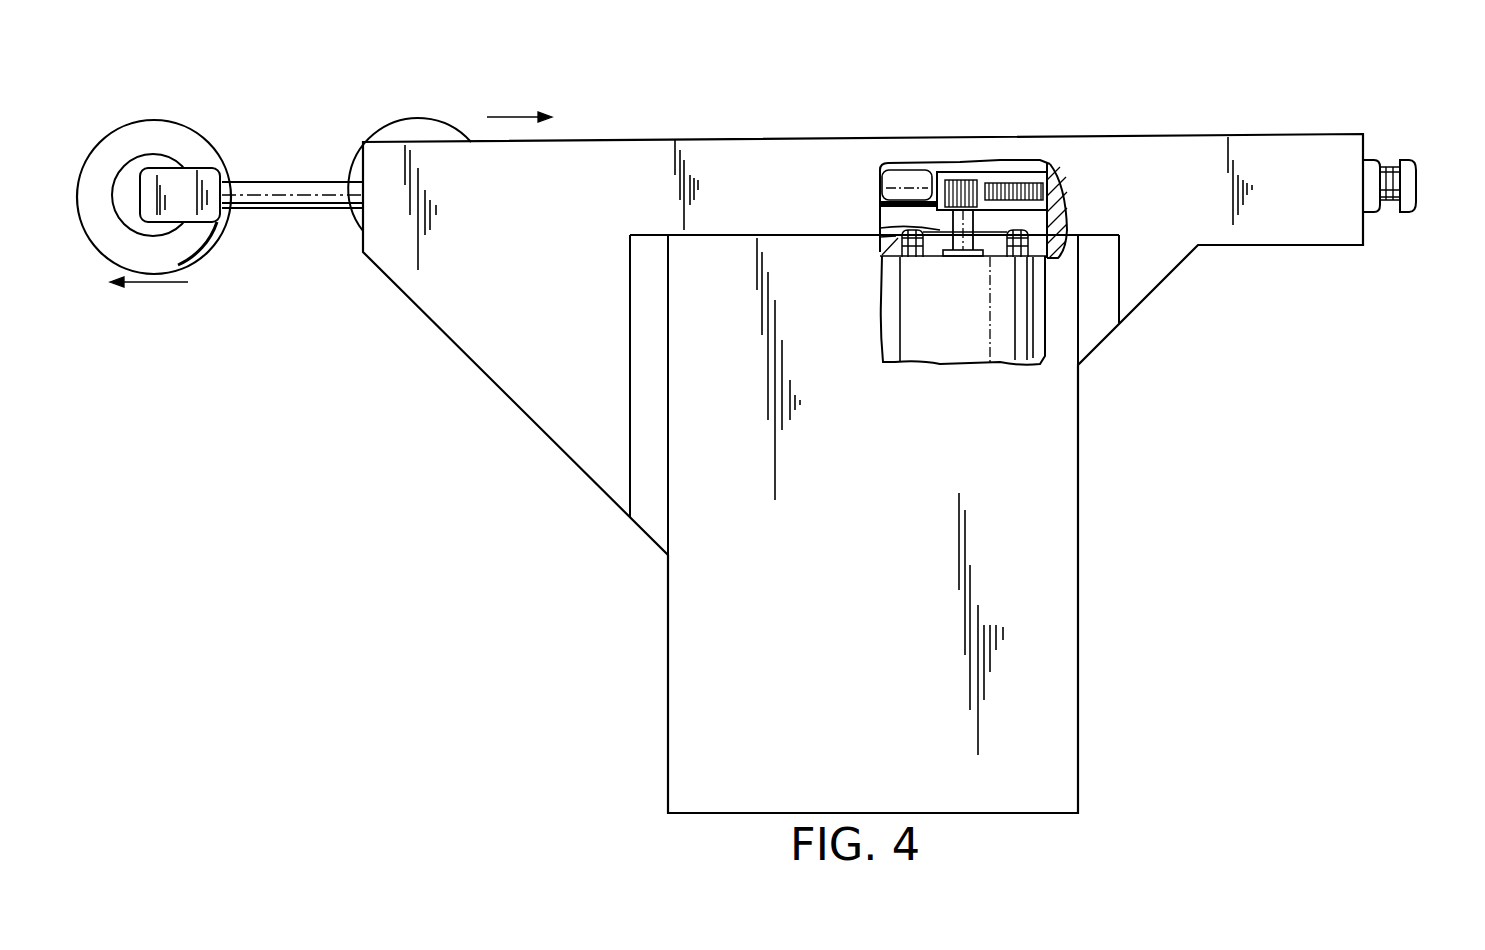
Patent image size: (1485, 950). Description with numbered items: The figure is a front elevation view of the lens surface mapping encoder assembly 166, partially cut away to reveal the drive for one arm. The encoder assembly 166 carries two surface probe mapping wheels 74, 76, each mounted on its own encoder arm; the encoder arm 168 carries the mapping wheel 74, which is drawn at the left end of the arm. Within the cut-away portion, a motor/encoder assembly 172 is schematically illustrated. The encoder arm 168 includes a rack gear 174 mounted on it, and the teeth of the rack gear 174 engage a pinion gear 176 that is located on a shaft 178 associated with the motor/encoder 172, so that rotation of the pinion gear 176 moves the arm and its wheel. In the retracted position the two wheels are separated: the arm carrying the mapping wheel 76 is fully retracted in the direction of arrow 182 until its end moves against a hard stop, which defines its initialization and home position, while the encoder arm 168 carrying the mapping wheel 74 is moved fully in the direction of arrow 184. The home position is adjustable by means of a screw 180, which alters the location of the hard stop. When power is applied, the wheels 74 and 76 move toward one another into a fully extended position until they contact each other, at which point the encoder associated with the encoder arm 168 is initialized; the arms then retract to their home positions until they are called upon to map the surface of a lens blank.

The surface probe mapping wheel 74 is at (184, 124).
The surface probe mapping wheel 76 is at (428, 120).
The lens surface mapping encoder assembly 166 is at (1103, 90).
The encoder arm 168 is at (308, 180).
The motor/encoder assembly 172 is at (998, 343).
The rack gear 174 is at (1046, 173).
The pinion gear 176 is at (932, 160).
The shaft 178 is at (880, 231).
The screw 180 is at (1418, 160).
The arrow 182 is at (513, 116).
The arrow 184 is at (163, 282).